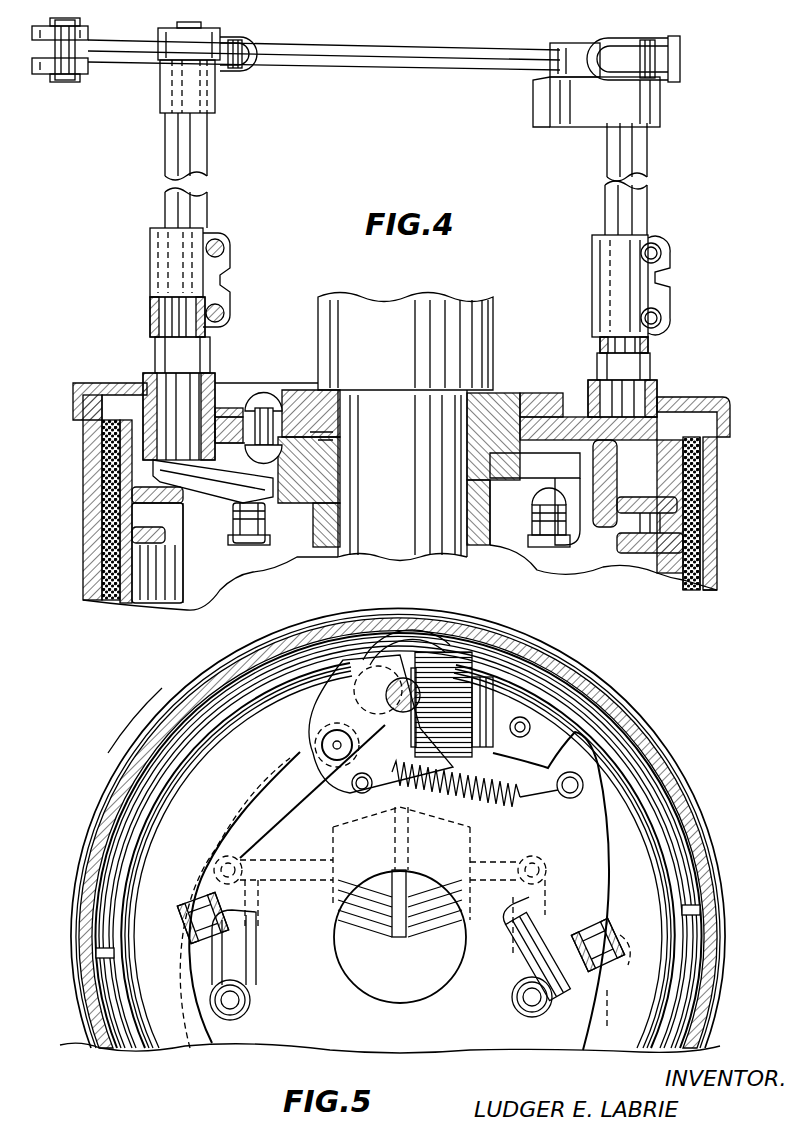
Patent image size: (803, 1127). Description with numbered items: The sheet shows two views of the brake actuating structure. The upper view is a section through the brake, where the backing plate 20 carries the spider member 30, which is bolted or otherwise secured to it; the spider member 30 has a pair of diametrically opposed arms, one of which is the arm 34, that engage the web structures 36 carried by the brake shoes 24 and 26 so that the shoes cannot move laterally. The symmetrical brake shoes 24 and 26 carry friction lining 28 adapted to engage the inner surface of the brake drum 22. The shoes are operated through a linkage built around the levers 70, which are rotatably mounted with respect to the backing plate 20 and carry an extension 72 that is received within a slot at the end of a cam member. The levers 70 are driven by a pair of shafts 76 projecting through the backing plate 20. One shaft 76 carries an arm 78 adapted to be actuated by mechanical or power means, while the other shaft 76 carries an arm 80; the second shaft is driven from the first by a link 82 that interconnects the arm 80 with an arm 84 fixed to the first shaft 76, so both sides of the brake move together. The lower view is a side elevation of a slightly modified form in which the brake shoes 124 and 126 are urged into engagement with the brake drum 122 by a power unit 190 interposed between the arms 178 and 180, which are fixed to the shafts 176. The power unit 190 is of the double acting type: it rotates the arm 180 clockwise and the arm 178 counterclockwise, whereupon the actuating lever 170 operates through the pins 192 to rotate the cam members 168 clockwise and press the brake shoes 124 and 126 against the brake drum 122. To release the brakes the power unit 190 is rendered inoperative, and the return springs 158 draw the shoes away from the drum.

In FIG. 4, the backing plate 20 is at (705, 398).
In FIG. 4, the brake drum 22 is at (718, 483).
In FIG. 4, the brake shoe 24 is at (120, 462).
In FIG. 4, the brake shoe 26 is at (685, 585).
In FIG. 4, the friction lining 28 is at (110, 532).
In FIG. 4, the spider member 30 is at (450, 541).
In FIG. 4, the arm 34 is at (605, 525).
In FIG. 4, the web structure 36 is at (163, 535).
In FIG. 4, the lever 70 is at (230, 490).
In FIG. 4, the extension 72 is at (262, 520).
In FIG. 4, the shaft 76 is at (207, 160).
In FIG. 4, the arm 78 is at (120, 58).
In FIG. 4, the arm 80 is at (683, 62).
In FIG. 4, the link 82 is at (380, 68).
In FIG. 4, the arm 84 is at (262, 57).
In FIG. 5, the brake drum 122 is at (678, 808).
In FIG. 5, the brake shoe 124 is at (140, 1000).
In FIG. 5, the brake shoe 126 is at (650, 995).
In FIG. 5, the return spring 158 is at (500, 797).
In FIG. 5, the shoe web 168 is at (262, 835).
In FIG. 5, the actuating lever 170 is at (248, 960).
In FIG. 5, the shaft 176 is at (250, 1002).
In FIG. 5, the arm 178 is at (248, 904).
In FIG. 5, the arm 180 is at (550, 907).
In FIG. 5, the power unit 190 is at (373, 918).
In FIG. 5, the pin 192 is at (222, 950).